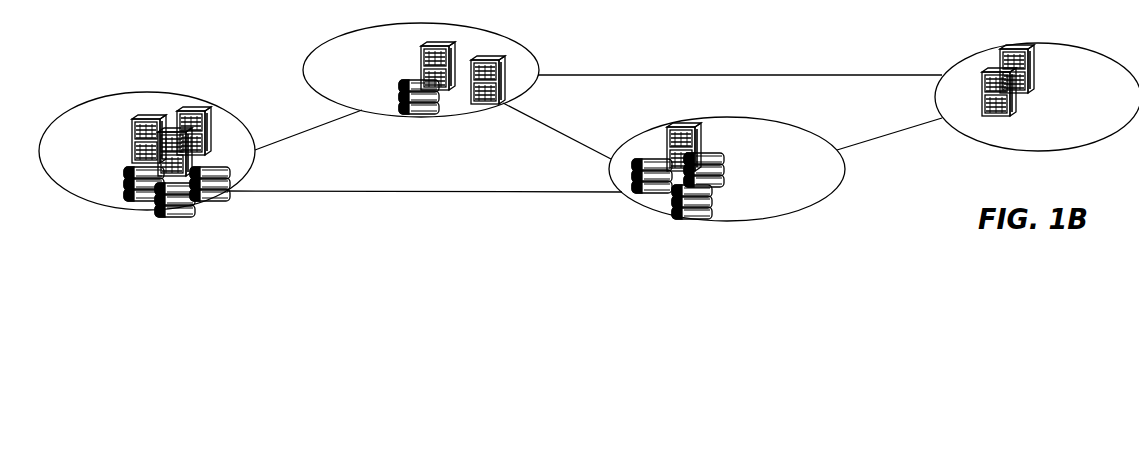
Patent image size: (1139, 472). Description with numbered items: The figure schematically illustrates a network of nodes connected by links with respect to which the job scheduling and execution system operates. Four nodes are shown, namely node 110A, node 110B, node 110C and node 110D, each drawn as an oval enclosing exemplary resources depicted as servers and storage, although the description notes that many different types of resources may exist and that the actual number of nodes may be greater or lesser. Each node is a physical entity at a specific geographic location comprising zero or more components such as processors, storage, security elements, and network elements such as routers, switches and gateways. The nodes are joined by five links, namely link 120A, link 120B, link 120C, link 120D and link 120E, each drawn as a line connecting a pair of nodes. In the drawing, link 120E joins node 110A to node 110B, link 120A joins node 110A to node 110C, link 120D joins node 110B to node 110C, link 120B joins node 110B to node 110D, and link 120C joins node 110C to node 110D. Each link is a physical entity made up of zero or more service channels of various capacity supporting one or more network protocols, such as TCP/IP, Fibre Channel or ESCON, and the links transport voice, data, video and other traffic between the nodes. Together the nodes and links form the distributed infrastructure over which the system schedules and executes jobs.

The node 110A is at (116, 172).
The node 110B is at (382, 98).
The node 110C is at (802, 198).
The node 110D is at (1106, 120).
The link 120A is at (424, 177).
The link 120B is at (740, 60).
The link 120C is at (889, 155).
The link 120D is at (560, 127).
The link 120E is at (307, 116).